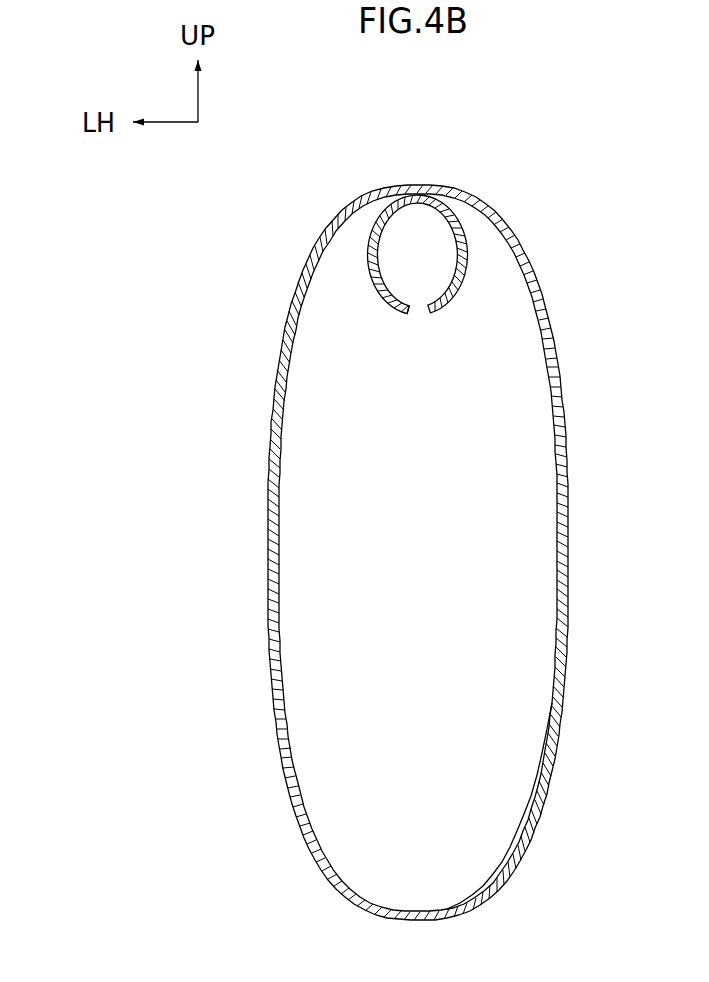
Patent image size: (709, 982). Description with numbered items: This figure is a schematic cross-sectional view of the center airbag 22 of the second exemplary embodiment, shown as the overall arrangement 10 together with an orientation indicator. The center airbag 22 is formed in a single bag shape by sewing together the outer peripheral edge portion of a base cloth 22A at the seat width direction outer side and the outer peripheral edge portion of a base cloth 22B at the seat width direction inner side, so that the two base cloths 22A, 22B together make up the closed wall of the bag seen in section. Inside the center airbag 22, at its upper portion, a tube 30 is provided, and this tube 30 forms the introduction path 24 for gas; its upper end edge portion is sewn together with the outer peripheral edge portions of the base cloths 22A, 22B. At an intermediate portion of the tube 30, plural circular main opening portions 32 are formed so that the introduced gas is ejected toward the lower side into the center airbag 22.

The vehicle seat cushion / assembly 10 is at (295, 183).
The center airbag 22 is at (552, 314).
The base cloth 22A is at (268, 559).
The base cloth 22B is at (568, 545).
The introduction path 24 is at (479, 242).
The tube 30 is at (380, 310).
The main opening portions 32 is at (407, 313).